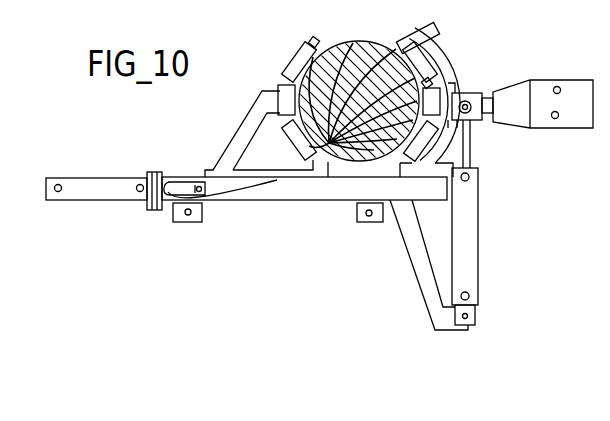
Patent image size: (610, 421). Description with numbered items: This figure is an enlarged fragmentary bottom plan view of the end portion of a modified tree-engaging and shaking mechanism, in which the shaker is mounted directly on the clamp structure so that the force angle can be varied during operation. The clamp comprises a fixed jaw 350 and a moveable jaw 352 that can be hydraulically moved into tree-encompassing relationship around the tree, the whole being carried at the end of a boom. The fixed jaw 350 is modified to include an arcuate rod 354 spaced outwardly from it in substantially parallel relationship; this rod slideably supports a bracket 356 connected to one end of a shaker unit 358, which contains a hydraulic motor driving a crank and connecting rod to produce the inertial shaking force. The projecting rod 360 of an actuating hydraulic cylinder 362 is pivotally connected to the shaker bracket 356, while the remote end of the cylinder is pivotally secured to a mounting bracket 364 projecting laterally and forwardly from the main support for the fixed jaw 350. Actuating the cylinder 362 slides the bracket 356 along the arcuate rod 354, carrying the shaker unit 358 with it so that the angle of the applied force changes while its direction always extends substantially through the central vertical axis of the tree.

The fixed jaw 350 is at (437, 33).
The moveable jaw 352 is at (296, 60).
The arcuate rod 354 is at (450, 52).
The bracket 356 is at (477, 100).
The shaker unit 358 is at (545, 88).
The projecting rod 360 is at (468, 157).
The actuating hydraulic cylinder 362 is at (465, 227).
The mounting bracket 364 is at (418, 255).